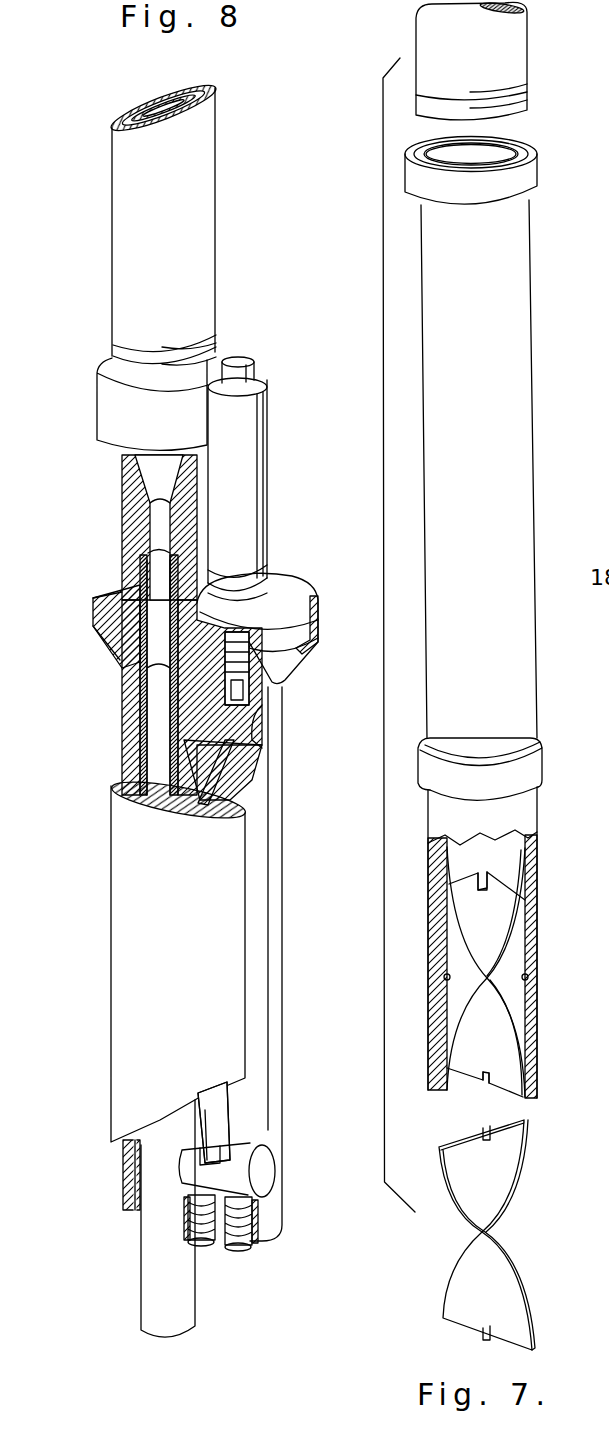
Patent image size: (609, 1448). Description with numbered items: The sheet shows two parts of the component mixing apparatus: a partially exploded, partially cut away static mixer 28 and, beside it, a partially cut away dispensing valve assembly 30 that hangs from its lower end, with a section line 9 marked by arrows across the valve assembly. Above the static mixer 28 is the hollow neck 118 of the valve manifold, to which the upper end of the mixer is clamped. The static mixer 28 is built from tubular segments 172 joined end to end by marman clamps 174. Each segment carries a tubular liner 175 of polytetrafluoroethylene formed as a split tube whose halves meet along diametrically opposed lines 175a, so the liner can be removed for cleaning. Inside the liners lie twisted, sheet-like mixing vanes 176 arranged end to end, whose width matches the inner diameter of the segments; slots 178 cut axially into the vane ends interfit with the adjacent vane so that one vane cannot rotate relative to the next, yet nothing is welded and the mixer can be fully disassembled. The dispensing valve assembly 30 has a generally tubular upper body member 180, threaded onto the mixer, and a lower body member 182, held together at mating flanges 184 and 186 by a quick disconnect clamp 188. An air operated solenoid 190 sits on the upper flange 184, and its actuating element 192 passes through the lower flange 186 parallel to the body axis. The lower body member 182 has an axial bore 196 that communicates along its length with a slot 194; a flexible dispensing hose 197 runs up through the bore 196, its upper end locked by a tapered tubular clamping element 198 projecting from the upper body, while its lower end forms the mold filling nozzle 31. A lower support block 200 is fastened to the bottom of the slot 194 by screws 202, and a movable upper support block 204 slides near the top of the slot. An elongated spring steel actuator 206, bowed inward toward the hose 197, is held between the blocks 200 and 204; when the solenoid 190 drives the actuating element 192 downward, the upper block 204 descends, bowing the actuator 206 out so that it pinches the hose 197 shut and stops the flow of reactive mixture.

In FIG. 8, the section line 9- 9 is at (197, 58).
In FIG. 8, the static mixer 28 is at (224, 222).
In FIG. 7, the static mixer 28 is at (552, 210).
In FIG. 8, the dispensing valve assembly 30 is at (100, 850).
In FIG. 8, the mold filling nozzle 31 is at (200, 1316).
In FIG. 7, the hollow neck 118 is at (518, 72).
In FIG. 7, the tubular segments 172 is at (527, 403).
In FIG. 7, the marman clamps 174 is at (527, 196).
In FIG. 7, the tubular liner 175 is at (528, 979).
In FIG. 7, the diametrically opposed lines 175a is at (552, 137).
In FIG. 7, the mixing vanes 176 is at (535, 882).
In FIG. 7, the slots 178 is at (480, 893).
In FIG. 8, the upper body member 180 is at (122, 513).
In FIG. 8, the lower body member 182 is at (127, 720).
In FIG. 8, the upper body member flange 184 is at (108, 598).
In FIG. 8, the lower body member flange 186 is at (110, 644).
In FIG. 8, the quick disconnect clamp 188 is at (315, 597).
In FIG. 8, the air operated solenoid 190 is at (258, 459).
In FIG. 8, the actuating element 192 is at (255, 662).
In FIG. 8, the slot 194 is at (252, 796).
In FIG. 8, the bore 196 is at (140, 760).
In FIG. 8, the flexible dispensing hose 197 is at (148, 1162).
In FIG. 8, the tapered tubular clamping element 198 is at (96, 601).
In FIG. 8, the lower support block 200 is at (263, 1172).
In FIG. 8, the screws 202 is at (240, 1250).
In FIG. 8, the upper support block 204 is at (262, 735).
In FIG. 8, the resilient actuator 206 is at (218, 1120).